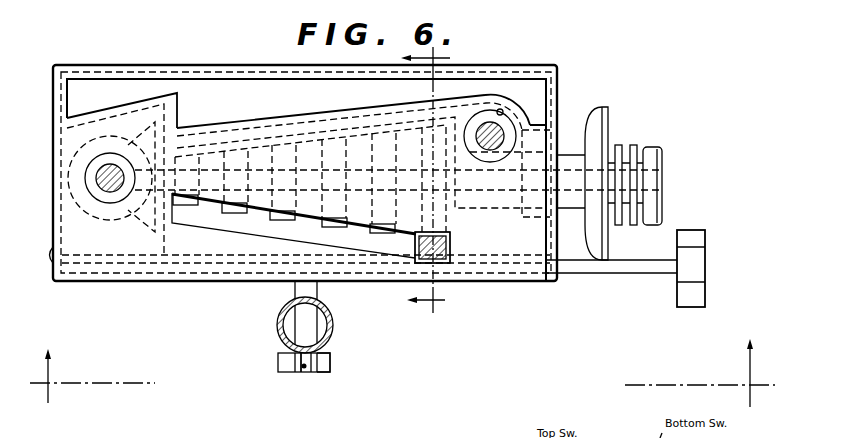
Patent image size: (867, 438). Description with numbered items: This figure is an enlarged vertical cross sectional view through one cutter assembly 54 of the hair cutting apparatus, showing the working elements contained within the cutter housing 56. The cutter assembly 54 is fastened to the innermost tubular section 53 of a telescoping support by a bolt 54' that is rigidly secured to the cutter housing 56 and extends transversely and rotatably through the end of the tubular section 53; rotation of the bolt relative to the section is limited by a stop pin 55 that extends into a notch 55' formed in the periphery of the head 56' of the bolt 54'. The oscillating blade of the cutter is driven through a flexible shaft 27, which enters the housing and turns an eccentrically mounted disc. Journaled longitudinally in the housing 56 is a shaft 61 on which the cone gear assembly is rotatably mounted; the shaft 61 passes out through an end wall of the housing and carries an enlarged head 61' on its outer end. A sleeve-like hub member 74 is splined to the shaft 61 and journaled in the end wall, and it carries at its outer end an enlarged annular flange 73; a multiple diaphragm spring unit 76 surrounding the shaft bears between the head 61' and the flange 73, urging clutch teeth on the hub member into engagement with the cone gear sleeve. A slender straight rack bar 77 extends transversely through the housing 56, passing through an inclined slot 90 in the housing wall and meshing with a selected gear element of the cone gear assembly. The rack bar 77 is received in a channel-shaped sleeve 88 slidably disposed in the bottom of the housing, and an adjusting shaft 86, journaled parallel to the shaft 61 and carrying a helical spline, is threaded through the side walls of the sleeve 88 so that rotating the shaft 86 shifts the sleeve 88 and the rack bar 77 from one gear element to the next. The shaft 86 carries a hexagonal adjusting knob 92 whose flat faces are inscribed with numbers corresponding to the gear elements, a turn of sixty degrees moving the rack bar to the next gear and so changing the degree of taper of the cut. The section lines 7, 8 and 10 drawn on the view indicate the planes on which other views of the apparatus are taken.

The section line 7- 7 is at (402, 374).
The section line 8- 8 is at (22, 124).
The section line 10- 10 is at (436, 180).
The flexible shaft 27 is at (491, 130).
The innermost tubular section 53 is at (330, 322).
The cutter assembly 54 is at (304, 199).
The bolt 54' is at (267, 316).
The stop pin 55 is at (304, 377).
The notch 55' is at (284, 390).
The cutter housing 56 is at (558, 223).
The head of bolt 56' is at (346, 372).
The shaft 61 is at (310, 164).
The enlarged head 61' is at (664, 169).
The enlarged annular flange 73 is at (607, 110).
The sleeve-like hub member 74 is at (565, 160).
The multiple diaphragm spring unit 76 is at (634, 145).
The straight rack bar 77 is at (450, 238).
The adjusting shaft 86 is at (615, 268).
The channel-shaped sleeve 88 is at (449, 252).
The inclined slot 90 is at (200, 226).
The hexagonal adjusting knob 92 is at (705, 252).